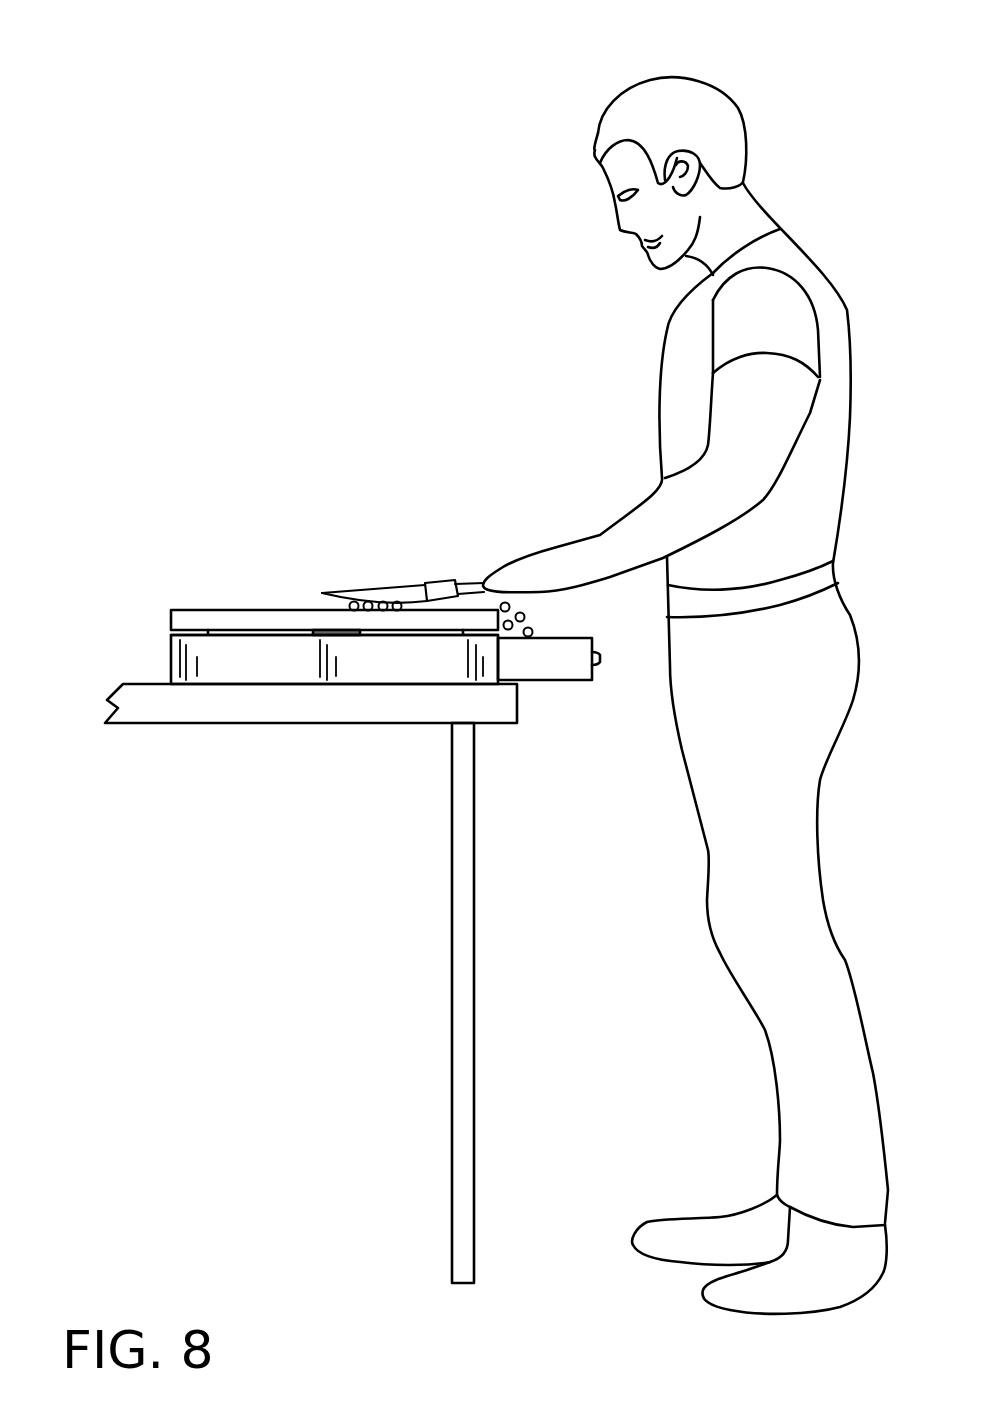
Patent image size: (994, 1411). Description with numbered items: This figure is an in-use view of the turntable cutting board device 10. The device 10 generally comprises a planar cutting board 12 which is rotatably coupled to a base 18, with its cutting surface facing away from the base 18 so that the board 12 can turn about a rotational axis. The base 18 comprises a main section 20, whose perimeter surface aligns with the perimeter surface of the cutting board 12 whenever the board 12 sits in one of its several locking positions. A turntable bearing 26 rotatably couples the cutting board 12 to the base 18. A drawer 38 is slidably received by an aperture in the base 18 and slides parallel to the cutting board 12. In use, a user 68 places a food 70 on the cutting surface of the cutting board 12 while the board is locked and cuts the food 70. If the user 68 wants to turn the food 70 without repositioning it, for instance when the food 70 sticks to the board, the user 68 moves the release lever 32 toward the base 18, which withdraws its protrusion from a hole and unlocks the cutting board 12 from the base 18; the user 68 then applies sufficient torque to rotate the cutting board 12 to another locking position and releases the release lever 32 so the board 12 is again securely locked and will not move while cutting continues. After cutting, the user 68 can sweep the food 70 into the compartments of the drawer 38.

The turntable cutting board device 10 is at (178, 378).
The cutting board 12 is at (201, 612).
The base 18 is at (172, 656).
The main section 20 is at (258, 658).
The turntable bearing 26 is at (330, 633).
The release lever 32 is at (170, 630).
The drawer 38 is at (570, 705).
The user 68 is at (782, 133).
The food 70 is at (397, 602).